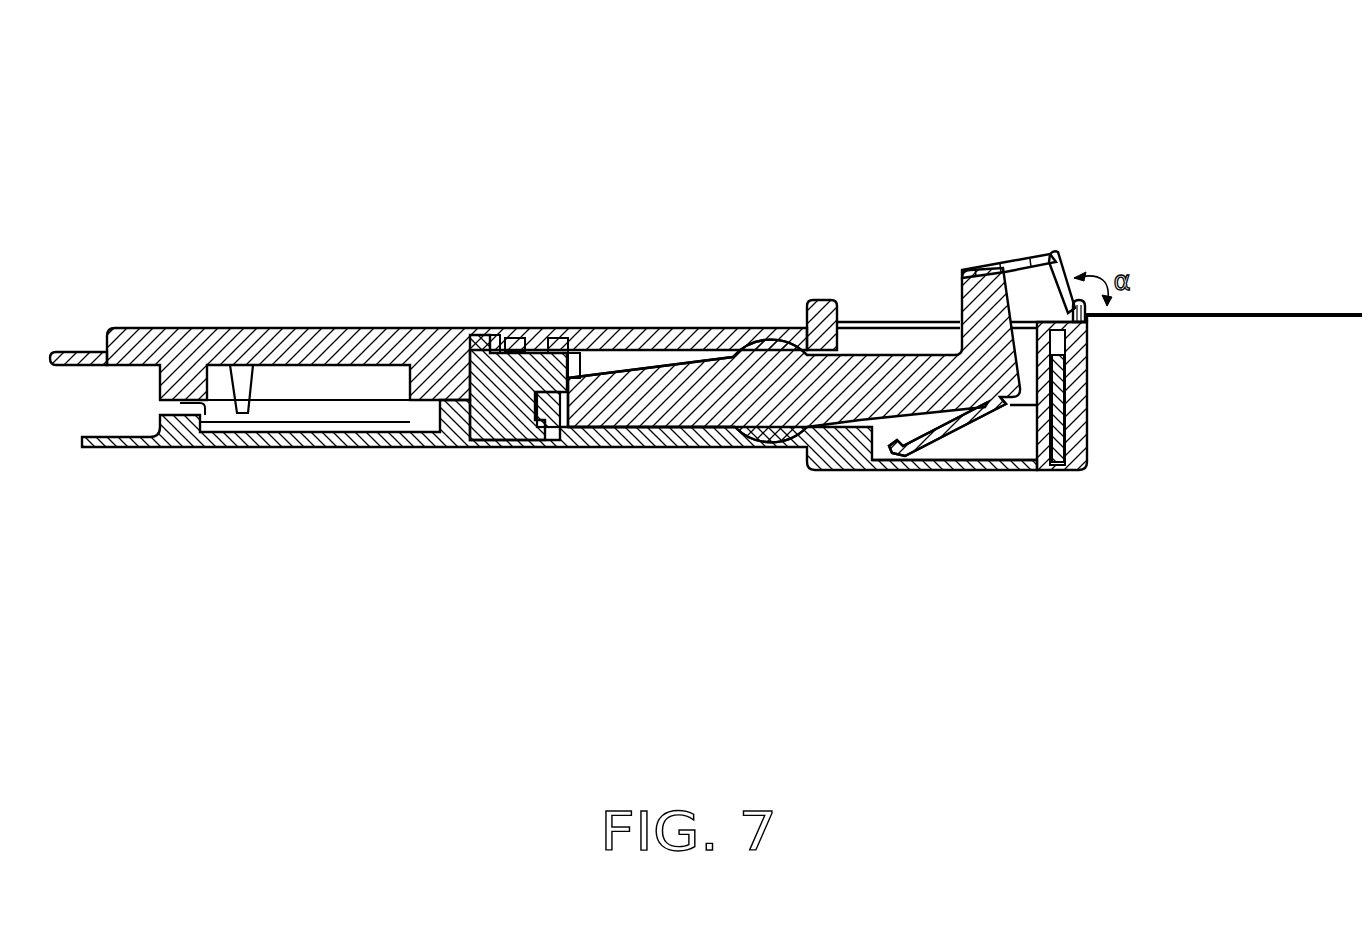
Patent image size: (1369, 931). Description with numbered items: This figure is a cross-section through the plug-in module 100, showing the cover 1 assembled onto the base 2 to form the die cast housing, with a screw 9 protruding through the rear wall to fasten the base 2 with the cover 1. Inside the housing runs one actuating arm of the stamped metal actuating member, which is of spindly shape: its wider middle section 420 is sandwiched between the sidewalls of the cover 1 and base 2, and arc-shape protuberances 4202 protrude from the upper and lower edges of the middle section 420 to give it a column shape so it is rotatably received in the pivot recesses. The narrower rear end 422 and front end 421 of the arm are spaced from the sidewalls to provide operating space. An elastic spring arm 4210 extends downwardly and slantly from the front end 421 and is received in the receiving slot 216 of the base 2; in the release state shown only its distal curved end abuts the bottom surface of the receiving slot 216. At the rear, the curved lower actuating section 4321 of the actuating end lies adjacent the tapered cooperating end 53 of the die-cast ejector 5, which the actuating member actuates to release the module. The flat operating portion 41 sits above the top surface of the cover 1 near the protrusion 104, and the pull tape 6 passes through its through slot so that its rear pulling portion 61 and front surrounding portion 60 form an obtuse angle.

The plug-in module 100 is at (667, 82).
The cover 1 is at (335, 348).
The base 2 is at (335, 437).
The ejector 5 is at (500, 375).
The cooperating end 53 is at (546, 345).
The lower actuating section 4321 is at (550, 430).
The rear end 422 is at (625, 390).
The arc-shape protuberance 4202 is at (783, 383).
The middle section 420 is at (825, 330).
The front end 421 is at (890, 372).
The spring arm 4210 is at (947, 437).
The receiving slot 216 is at (993, 447).
The operating portion 41 is at (1010, 262).
The pull tape 6 is at (1075, 295).
The surrounding portion 60 is at (1068, 278).
The protrusion 104 is at (1093, 320).
The pulling portion 61 is at (1225, 318).
The screw 9 is at (1085, 423).